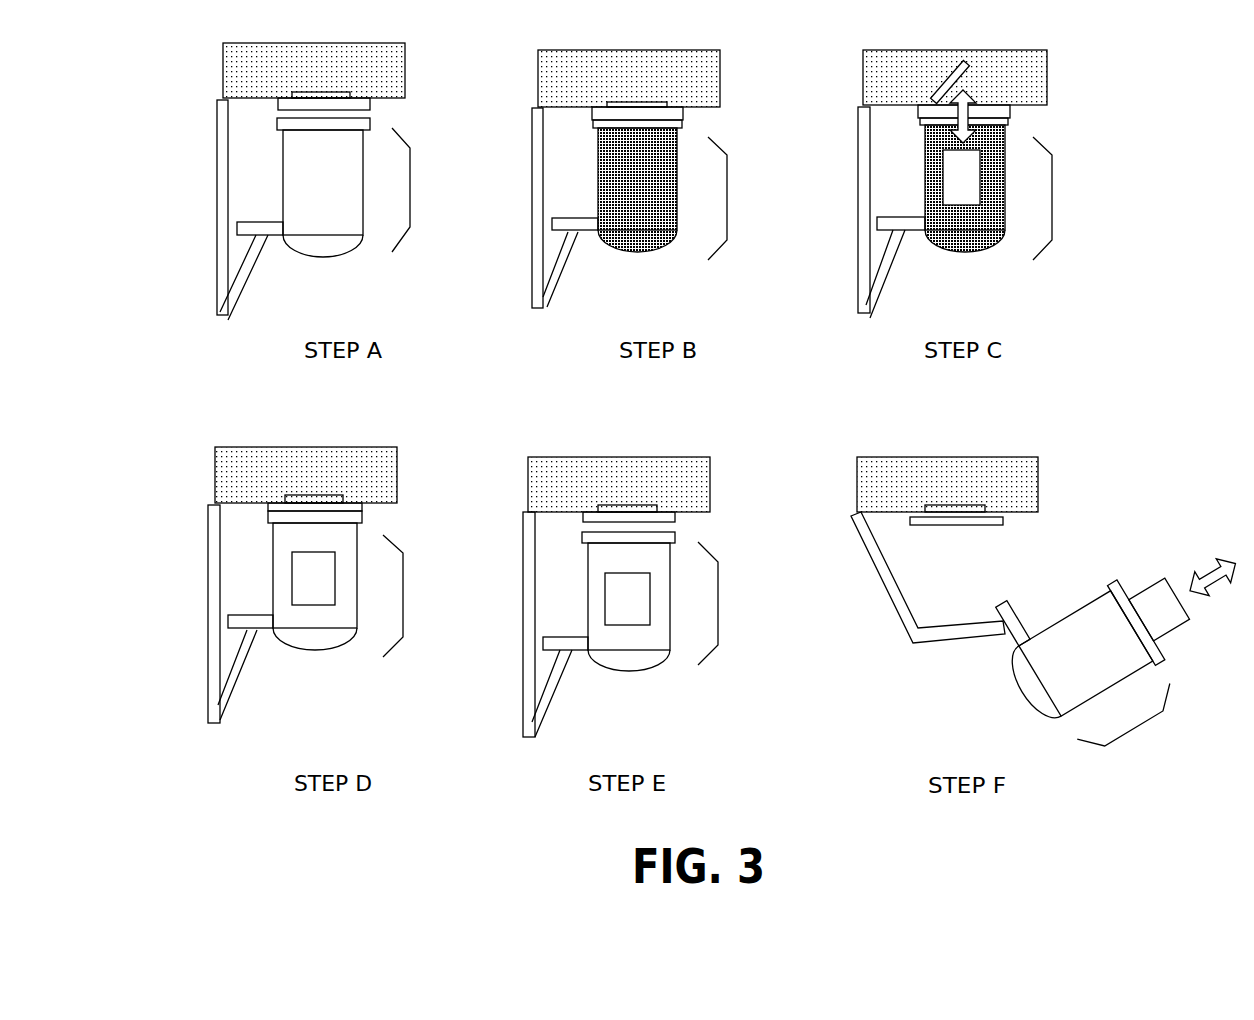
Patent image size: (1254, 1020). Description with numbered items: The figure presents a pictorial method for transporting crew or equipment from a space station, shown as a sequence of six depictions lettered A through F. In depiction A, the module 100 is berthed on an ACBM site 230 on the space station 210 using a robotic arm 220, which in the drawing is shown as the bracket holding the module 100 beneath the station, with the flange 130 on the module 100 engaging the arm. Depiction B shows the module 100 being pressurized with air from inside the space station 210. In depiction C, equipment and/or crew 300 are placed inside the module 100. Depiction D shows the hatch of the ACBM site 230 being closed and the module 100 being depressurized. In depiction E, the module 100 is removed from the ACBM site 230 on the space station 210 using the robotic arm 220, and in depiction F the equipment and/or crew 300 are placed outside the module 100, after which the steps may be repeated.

The module 100 is at (413, 188).
The flange 130 is at (237, 228).
The space station 210 is at (387, 68).
The robotic arm 220 is at (217, 177).
The ACBM site 230 is at (370, 110).
The equipment and/or crew 300 is at (958, 205).